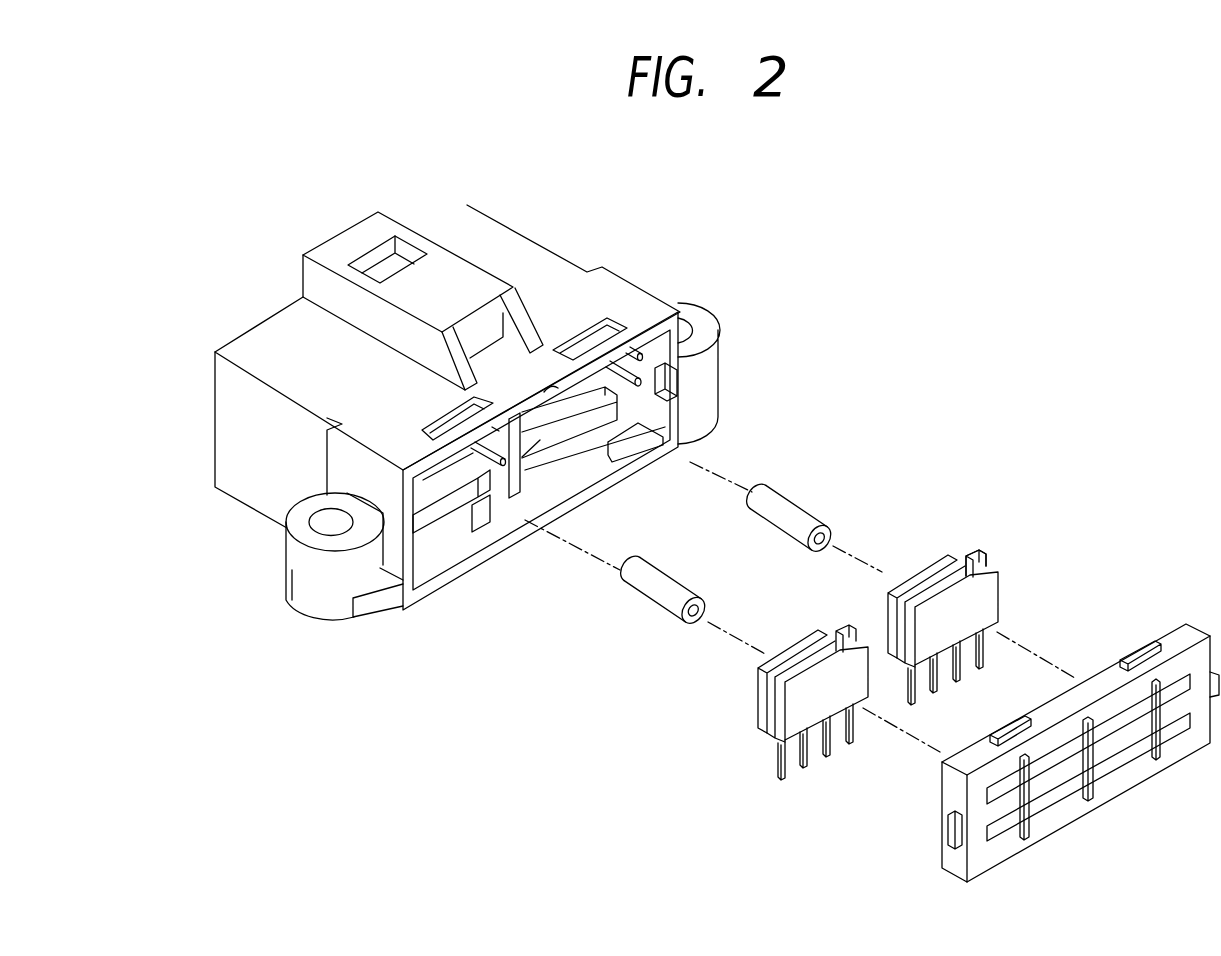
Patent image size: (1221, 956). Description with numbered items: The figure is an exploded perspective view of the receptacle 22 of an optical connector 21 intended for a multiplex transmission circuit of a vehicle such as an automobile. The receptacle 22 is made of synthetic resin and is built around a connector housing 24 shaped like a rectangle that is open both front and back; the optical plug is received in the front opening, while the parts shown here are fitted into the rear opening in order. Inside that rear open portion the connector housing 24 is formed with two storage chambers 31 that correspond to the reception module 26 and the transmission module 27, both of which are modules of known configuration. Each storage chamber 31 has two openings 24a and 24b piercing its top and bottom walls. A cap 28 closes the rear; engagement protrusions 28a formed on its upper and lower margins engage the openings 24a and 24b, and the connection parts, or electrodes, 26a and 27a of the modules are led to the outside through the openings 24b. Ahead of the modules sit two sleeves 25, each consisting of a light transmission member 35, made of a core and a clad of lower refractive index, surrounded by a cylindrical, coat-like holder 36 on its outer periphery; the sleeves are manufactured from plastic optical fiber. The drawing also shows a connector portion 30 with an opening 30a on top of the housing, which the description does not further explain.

The optical connector 21 is at (812, 330).
The receptacle 22 is at (545, 254).
The connector housing 24 is at (263, 498).
The opening 24a is at (592, 325).
The opening 24b is at (588, 456).
The sleeve 25 is at (807, 500).
The reception module 26 is at (758, 705).
The connection part 26a is at (779, 776).
The transmission module 27 is at (952, 556).
The connection part 27a is at (1005, 722).
The cap 28 is at (1140, 776).
The engagement protrusion 28a is at (1008, 724).
The connector portion 30 is at (346, 245).
The connector opening 30a is at (397, 262).
The storage chamber 31 is at (650, 360).
The light transmission member 35 is at (693, 619).
The holder 36 is at (655, 602).